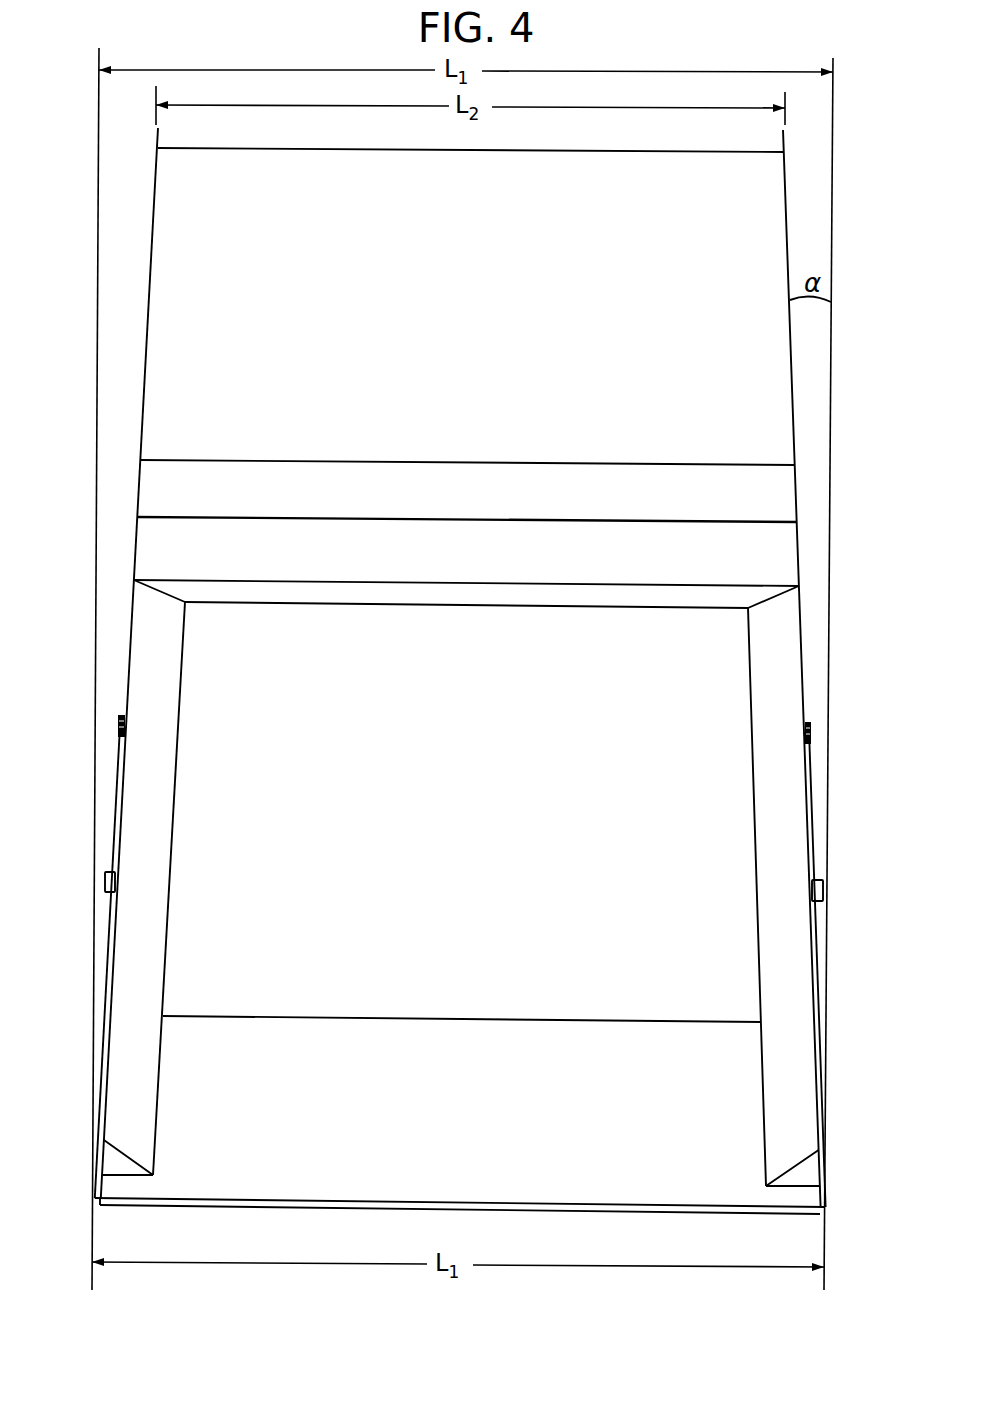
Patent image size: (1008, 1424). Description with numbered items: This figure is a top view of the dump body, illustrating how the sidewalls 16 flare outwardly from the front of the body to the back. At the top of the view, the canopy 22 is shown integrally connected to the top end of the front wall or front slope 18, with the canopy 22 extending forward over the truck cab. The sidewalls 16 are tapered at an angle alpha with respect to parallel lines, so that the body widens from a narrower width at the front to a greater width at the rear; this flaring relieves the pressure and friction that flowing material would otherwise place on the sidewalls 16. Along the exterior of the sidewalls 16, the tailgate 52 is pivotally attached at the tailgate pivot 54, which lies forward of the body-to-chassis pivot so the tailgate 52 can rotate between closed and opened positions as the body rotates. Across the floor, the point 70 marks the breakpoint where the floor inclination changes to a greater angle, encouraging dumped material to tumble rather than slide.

The canopy 22 is at (173, 326).
The front wall or front slope 18 is at (155, 545).
The sidewalls 16 is at (128, 665).
The tailgate 52 is at (118, 752).
The tailgate pivot 54 is at (105, 882).
The point 70 is at (462, 1019).